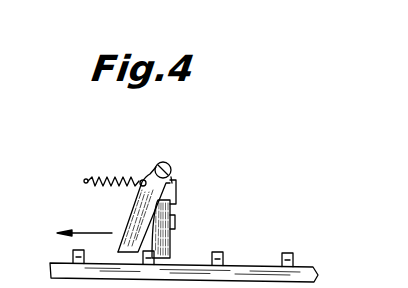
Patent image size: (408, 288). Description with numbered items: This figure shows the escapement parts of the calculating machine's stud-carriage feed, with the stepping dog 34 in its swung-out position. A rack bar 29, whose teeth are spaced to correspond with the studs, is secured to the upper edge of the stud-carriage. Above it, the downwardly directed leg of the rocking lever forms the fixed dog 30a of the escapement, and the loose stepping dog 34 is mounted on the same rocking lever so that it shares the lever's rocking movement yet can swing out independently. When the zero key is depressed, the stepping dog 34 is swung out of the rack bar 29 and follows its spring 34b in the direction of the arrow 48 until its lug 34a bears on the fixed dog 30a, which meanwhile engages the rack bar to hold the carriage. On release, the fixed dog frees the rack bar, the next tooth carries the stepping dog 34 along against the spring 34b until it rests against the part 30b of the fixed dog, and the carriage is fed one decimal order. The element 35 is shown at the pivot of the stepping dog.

The rack bar 29 is at (252, 270).
The fixed dog 30a is at (175, 200).
The part of the fixed dog 30b is at (177, 227).
The stepping dog 34 is at (141, 213).
The lug 34a is at (177, 188).
The spring 34b is at (118, 177).
The pivot 35 is at (164, 162).
The arrow 48 is at (84, 226).